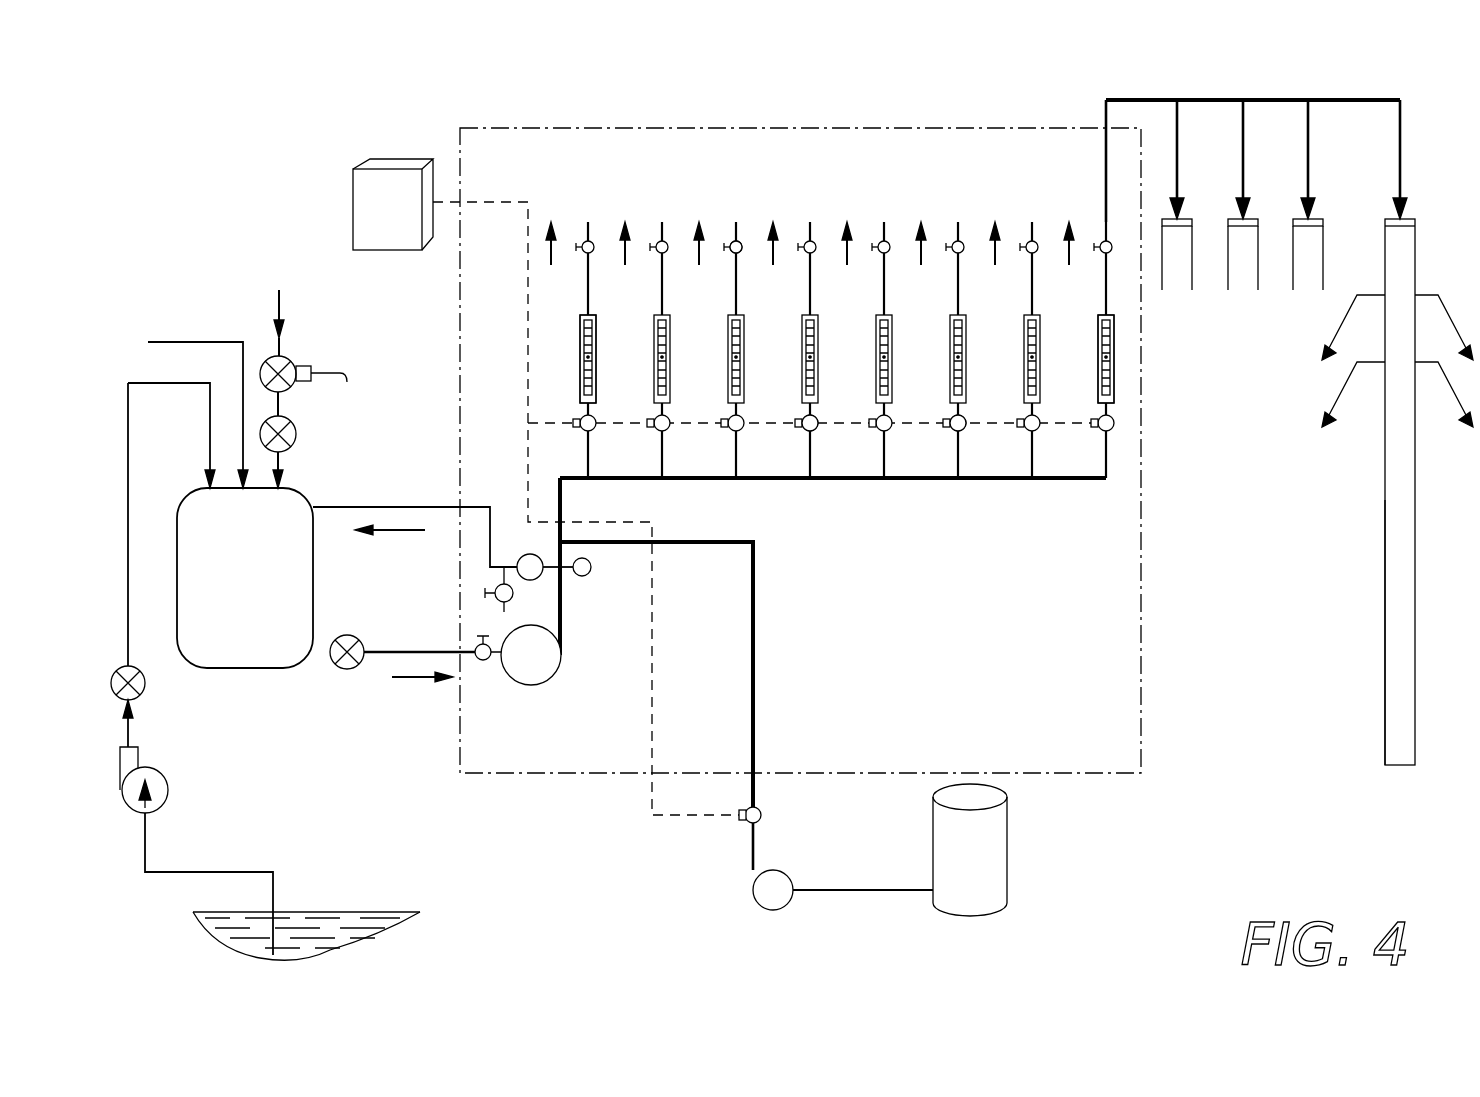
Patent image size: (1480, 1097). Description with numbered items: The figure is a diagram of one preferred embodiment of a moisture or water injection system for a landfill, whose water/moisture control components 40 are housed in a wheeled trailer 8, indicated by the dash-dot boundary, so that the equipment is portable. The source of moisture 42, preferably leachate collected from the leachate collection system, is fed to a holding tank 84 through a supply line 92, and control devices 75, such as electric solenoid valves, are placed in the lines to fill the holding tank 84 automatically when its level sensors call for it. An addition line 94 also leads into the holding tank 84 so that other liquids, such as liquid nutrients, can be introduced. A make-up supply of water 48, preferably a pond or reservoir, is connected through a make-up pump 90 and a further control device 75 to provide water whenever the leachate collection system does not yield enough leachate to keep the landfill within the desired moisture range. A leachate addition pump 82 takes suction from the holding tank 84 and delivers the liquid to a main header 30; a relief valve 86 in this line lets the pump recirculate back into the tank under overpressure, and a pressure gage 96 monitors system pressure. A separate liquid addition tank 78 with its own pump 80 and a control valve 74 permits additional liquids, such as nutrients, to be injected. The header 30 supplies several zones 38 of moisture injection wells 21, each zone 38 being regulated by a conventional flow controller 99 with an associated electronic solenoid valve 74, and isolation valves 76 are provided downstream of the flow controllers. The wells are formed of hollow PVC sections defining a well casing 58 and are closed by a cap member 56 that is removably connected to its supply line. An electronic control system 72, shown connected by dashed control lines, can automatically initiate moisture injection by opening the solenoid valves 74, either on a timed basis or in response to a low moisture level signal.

The wheeled trailer 8 is at (1142, 680).
The moisture injection well 21 is at (1398, 483).
The main header 30 is at (1017, 480).
The zone 38 is at (588, 222).
The water/moisture control components 40 is at (240, 190).
The source of moisture 42 is at (281, 260).
The make-up supply of water 48 is at (347, 942).
The cap member 56 is at (1395, 221).
The well casing 58 is at (1386, 559).
The electronic control system 72 is at (372, 239).
The electronic solenoid valve 74 is at (820, 430).
The control device 75 is at (296, 434).
The isolation valve 76 is at (740, 245).
The liquid addition tank 78 is at (988, 877).
The pump 80 is at (770, 892).
The leachate addition pump 82 is at (534, 675).
The holding tank 84 is at (245, 578).
The relief valve 86 is at (530, 556).
The make-up pump 90 is at (160, 790).
The supply line 92 is at (283, 346).
The addition line 94 is at (197, 342).
The pressure gage 96 is at (582, 570).
The flow controller 99 is at (580, 372).